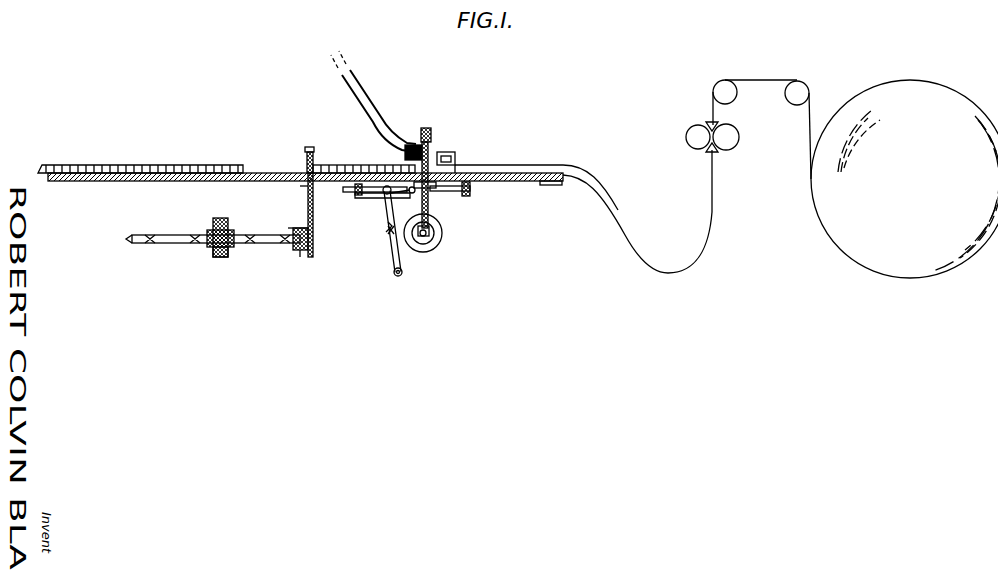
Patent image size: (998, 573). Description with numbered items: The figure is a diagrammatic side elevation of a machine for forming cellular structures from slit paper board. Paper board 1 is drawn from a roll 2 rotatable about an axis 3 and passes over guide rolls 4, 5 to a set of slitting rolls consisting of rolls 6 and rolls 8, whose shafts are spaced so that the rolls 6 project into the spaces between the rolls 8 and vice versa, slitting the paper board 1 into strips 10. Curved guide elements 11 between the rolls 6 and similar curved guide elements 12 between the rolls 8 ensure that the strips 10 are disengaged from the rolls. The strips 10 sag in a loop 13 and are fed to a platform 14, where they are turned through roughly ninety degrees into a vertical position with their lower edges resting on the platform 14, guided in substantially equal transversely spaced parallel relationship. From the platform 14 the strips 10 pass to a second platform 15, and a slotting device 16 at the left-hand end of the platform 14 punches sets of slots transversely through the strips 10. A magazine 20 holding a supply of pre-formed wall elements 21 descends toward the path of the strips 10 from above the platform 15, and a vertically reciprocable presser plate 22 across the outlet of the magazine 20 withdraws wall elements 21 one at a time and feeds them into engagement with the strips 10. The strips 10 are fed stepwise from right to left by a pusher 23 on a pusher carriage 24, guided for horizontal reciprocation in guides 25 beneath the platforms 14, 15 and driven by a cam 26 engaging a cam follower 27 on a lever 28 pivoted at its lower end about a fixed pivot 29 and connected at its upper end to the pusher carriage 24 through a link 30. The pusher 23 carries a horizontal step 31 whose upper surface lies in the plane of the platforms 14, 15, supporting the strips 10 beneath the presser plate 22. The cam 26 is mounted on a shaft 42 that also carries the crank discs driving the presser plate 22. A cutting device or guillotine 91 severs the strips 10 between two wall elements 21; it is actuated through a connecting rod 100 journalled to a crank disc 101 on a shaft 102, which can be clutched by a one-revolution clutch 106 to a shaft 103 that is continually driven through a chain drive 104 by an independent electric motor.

The paper board 1 is at (812, 114).
The roll 2 is at (937, 253).
The axis 3 is at (916, 188).
The guide roll 4 is at (797, 98).
The guide roll 5 is at (722, 86).
The rolls 6 is at (697, 136).
The rolls 8 is at (724, 137).
The strips 10 is at (534, 165).
The curved guide elements 11 is at (712, 141).
The curved guide elements 12 is at (713, 148).
The loop 13 is at (655, 274).
The platform 14 is at (557, 185).
The second platform 15 is at (372, 171).
The slotting device 16 is at (456, 159).
The magazine 20 is at (356, 103).
The wall elements 21 is at (418, 145).
The presser plate 22 is at (427, 128).
The pusher 23 is at (428, 190).
The pusher carriage 24 is at (352, 187).
The guides 25 is at (330, 201).
The cam 26 is at (405, 238).
The cam follower 27 is at (403, 248).
The lever 28 is at (390, 262).
The fixed pivot 29 is at (398, 276).
The link 30 is at (383, 196).
The horizontal step 31 is at (400, 199).
The shaft 42 is at (434, 232).
The cutting device or guillotine 91 is at (306, 151).
The connecting rod 100 is at (306, 224).
The crank disc 101 is at (306, 268).
The shaft 102 is at (260, 243).
The shaft 103 is at (190, 233).
The chain drive 104 is at (214, 256).
The clutch 106 is at (223, 228).